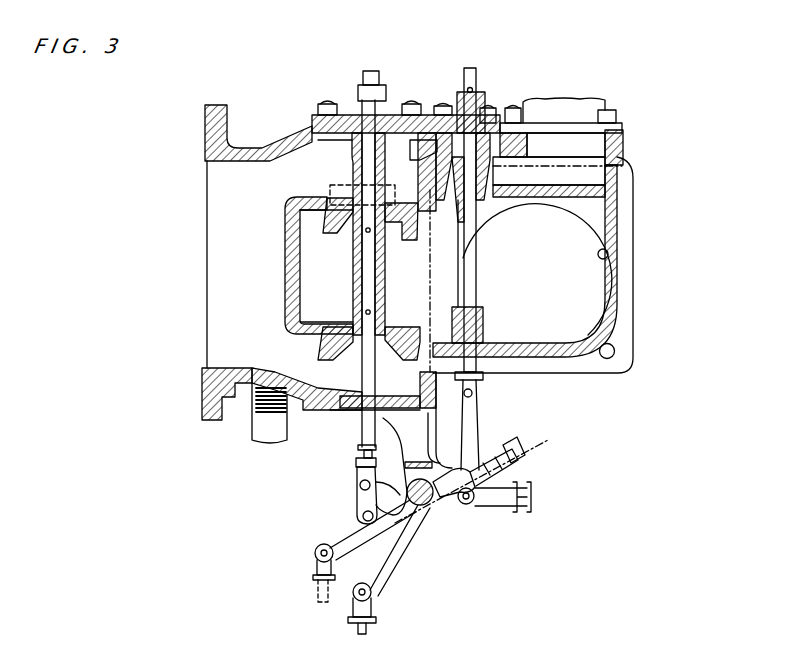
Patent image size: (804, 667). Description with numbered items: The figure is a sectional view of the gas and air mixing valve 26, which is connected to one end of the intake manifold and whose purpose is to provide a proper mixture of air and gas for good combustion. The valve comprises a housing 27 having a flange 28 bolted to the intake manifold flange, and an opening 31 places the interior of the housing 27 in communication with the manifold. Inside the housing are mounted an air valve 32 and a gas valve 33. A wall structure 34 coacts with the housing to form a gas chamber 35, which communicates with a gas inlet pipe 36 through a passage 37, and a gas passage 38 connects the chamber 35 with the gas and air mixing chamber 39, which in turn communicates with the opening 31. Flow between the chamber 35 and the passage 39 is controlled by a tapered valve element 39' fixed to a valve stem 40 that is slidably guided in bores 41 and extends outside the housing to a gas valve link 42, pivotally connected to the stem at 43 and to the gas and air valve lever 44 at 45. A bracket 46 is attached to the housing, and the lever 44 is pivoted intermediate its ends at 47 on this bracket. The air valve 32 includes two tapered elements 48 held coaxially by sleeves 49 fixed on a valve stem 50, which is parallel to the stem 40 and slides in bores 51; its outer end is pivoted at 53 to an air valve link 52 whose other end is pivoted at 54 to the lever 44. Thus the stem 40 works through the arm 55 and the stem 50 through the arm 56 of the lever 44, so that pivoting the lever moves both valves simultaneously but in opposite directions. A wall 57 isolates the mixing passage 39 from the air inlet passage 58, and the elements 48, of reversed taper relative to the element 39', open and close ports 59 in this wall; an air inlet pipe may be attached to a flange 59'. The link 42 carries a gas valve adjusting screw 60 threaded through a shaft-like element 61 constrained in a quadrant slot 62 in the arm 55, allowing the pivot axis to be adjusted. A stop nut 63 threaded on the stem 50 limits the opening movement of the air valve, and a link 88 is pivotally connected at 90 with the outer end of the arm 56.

The gas and air mixing valve 26 is at (203, 186).
The housing 27 is at (278, 148).
The flange 28 is at (628, 290).
The opening 31 is at (612, 252).
The air valve 32 is at (352, 272).
The gas valve 33 is at (486, 200).
The wall structure 34 is at (550, 198).
The gas chamber 35 is at (600, 174).
The gas inlet pipe 36 is at (603, 110).
The passage 37 is at (595, 148).
The gas passage 38 is at (462, 190).
The gas and air mixing chamber 39 is at (533, 269).
The tapered valve element 39' is at (515, 161).
The valve stem 40 is at (472, 258).
The bores 41 is at (480, 100).
The gas valve link 42 is at (472, 421).
The pivotal connection 43 is at (480, 396).
The gas and air valve lever 44 is at (442, 504).
The pivotal connection 45 is at (472, 460).
The bracket 46 is at (400, 445).
The pivotal connection 47 is at (362, 490).
The tapered elements 48 is at (345, 190).
The sleeves 49 is at (384, 254).
The valve stem 50 is at (366, 250).
The bores 51 is at (372, 148).
The air valve link 52 is at (365, 499).
The pivotal connection 53 is at (360, 485).
The pivotal connection 54 is at (363, 517).
The arm 55 is at (497, 491).
The arm 56 is at (322, 540).
The wall 57 is at (286, 270).
The air inlet passage 58 is at (215, 265).
The ports 59 is at (307, 309).
The flange 59' is at (201, 402).
The gas valve adjusting screw 60 is at (530, 452).
The shaft-like element 61 is at (475, 500).
The quadrant slot 62 is at (430, 465).
The stop nut 63 is at (386, 102).
The link 88 is at (318, 594).
The pivotal connection 90 is at (316, 555).